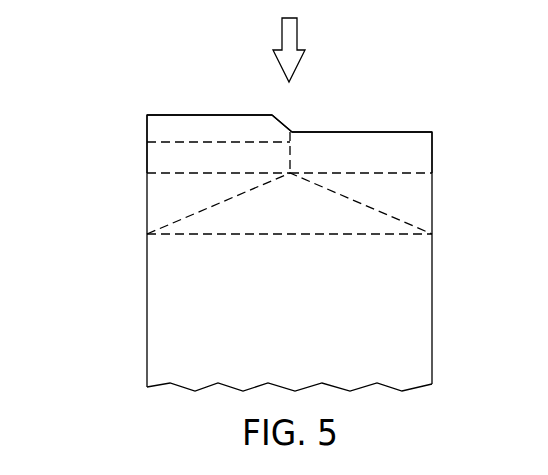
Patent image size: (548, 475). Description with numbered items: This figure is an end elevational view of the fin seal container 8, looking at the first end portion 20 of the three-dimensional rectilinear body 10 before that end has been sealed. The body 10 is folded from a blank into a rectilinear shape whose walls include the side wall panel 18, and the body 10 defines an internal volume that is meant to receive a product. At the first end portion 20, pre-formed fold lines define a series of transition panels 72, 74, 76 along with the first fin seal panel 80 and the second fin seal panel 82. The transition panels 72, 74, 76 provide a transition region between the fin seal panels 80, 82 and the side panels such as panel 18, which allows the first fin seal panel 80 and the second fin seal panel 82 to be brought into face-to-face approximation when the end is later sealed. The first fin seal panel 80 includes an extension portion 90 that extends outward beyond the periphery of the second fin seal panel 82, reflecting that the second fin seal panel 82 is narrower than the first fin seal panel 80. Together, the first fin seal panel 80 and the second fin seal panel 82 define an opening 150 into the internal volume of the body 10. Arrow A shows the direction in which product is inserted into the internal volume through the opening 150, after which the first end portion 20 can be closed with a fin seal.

The fin seal container 8 is at (452, 156).
The three-dimensional rectilinear body 10 is at (431, 280).
The side wall panel 18 is at (300, 321).
The first end portion 20 is at (130, 130).
The transition panel 72 is at (148, 200).
The transition panel 74 is at (303, 226).
The transition panel 76 is at (432, 201).
The first fin seal panel 80 is at (212, 150).
The second fin seal panel 82 is at (382, 140).
The extension portion 90 is at (237, 125).
The opening 150 is at (327, 130).
The arrow A is at (298, 33).